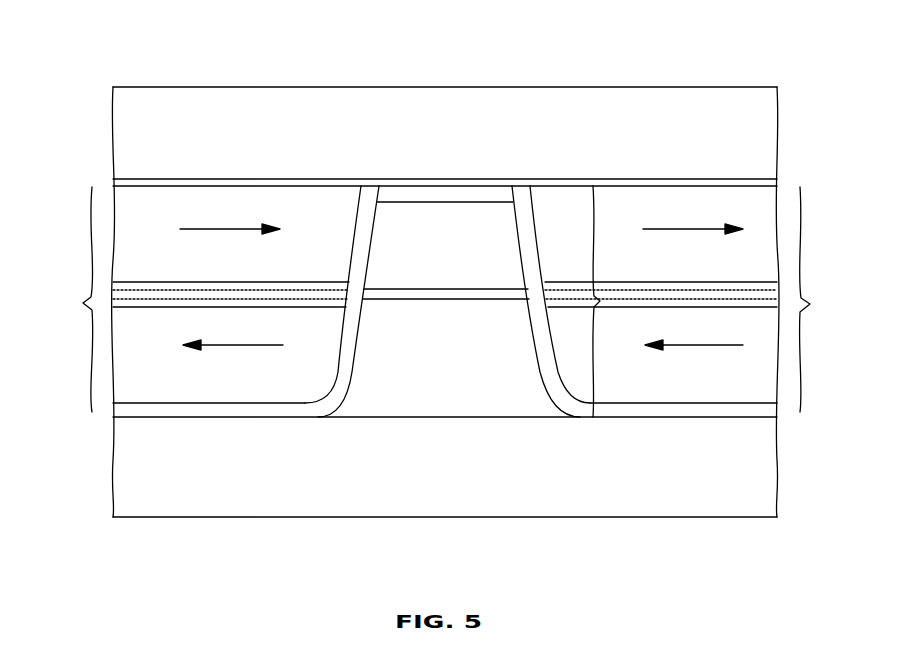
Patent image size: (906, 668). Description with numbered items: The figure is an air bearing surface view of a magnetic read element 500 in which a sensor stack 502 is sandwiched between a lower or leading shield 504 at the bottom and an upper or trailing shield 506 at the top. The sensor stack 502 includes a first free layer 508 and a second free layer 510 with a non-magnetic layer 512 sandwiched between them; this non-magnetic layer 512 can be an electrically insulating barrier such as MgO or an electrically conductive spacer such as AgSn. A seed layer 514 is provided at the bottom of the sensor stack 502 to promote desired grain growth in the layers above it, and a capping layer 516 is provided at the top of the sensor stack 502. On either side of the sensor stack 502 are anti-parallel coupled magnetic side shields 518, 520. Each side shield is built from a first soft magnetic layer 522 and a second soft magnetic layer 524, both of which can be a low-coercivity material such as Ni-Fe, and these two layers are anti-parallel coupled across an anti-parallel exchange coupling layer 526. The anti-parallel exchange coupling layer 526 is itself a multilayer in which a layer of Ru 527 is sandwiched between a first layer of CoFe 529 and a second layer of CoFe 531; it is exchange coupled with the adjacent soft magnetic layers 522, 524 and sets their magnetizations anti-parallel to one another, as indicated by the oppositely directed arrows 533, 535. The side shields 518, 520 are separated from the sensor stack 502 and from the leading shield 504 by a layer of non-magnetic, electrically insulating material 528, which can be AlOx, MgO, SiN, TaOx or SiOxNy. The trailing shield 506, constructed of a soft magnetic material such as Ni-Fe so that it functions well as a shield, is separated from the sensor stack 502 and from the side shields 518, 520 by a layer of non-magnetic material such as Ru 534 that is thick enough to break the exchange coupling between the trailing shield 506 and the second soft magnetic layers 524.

The read element 500 is at (549, 80).
The sensor stack 502 is at (596, 212).
The lower or leading shield 504 is at (488, 464).
The upper or trailing shield 506 is at (475, 140).
The first free layer 508 is at (485, 343).
The second free layer 510 is at (488, 248).
The non-magnetic layer 512 is at (440, 294).
The seed layer 514 is at (475, 406).
The capping layer 516 is at (428, 195).
The magnetic side shield 518 is at (800, 204).
The magnetic side shield 520 is at (90, 200).
The first soft magnetic layer 522 is at (200, 376).
The second soft magnetic layer 524 is at (232, 265).
The anti-parallel exchange coupling layer 526 is at (256, 282).
The layer of Ru 527 is at (115, 297).
The layer of non-magnetic, electrically insulating material 528 is at (202, 408).
The first layer of CoFe 529 is at (115, 304).
The second layer of CoFe 531 is at (115, 286).
The arrow 533 is at (255, 224).
The layer of non-magnetic material such as Ru 534 is at (592, 183).
The arrow 535 is at (212, 341).